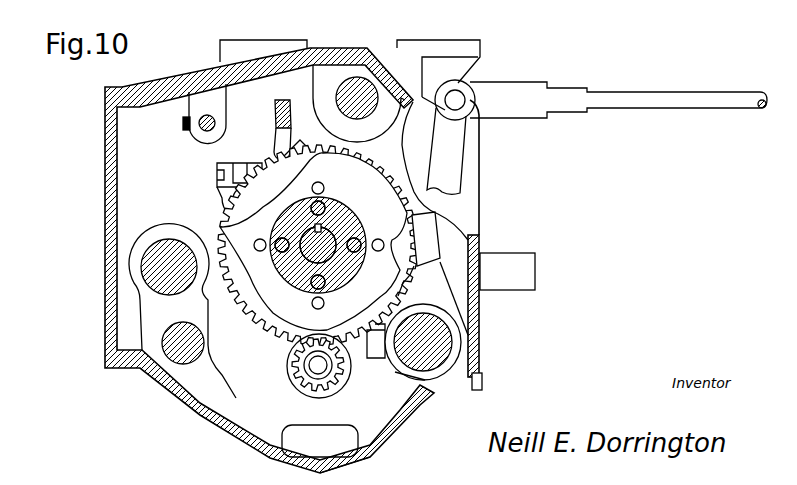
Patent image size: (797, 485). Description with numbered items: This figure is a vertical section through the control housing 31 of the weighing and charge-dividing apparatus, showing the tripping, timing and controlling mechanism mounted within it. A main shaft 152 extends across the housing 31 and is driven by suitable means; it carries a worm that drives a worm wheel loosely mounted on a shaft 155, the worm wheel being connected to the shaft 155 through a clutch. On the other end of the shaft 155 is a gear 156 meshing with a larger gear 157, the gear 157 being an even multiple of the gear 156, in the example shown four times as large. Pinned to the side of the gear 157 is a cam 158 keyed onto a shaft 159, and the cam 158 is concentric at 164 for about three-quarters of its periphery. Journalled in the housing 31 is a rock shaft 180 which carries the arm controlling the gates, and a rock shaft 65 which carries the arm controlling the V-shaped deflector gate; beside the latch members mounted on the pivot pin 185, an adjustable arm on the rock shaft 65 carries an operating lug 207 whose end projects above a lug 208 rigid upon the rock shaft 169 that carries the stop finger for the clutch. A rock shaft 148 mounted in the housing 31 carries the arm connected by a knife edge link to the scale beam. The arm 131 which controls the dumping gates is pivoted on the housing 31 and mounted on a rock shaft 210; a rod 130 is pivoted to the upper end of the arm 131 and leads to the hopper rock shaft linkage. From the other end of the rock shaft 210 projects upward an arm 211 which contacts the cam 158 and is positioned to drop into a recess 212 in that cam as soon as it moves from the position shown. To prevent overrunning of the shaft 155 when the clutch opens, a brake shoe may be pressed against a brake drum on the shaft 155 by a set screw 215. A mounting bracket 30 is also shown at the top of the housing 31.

The mounting bracket 30 is at (447, 40).
The housing 31 is at (432, 392).
The rock shaft 65 is at (368, 134).
The rod 130 is at (677, 105).
The arm 131 is at (462, 127).
The rock shaft 148 is at (180, 353).
The main shaft 152 is at (505, 253).
The shaft 155 is at (306, 386).
The gear 156 is at (311, 374).
The gear 157 is at (285, 338).
The cam 158 is at (266, 316).
The shaft 159 is at (318, 265).
The concentric portion 164 is at (322, 212).
The rock shaft 169 is at (240, 200).
The rock shaft 180 is at (170, 250).
The pivot pin 185 is at (201, 129).
The operating lug 207 is at (275, 133).
The lug 208 is at (272, 160).
The rock shaft 210 is at (445, 349).
The arm 211 is at (414, 241).
The recess 212 is at (395, 281).
The set screw 215 is at (484, 379).